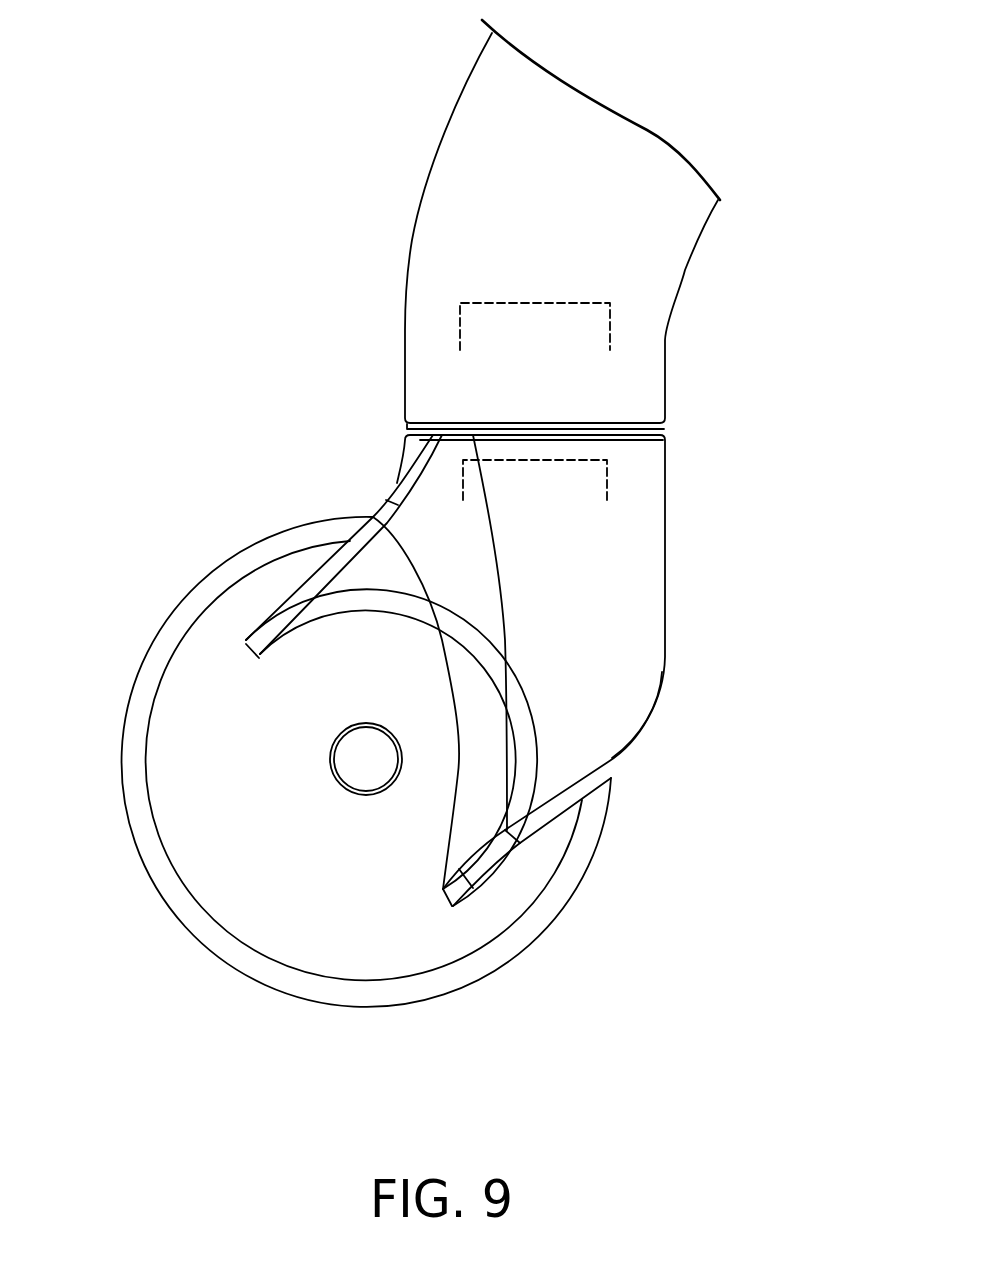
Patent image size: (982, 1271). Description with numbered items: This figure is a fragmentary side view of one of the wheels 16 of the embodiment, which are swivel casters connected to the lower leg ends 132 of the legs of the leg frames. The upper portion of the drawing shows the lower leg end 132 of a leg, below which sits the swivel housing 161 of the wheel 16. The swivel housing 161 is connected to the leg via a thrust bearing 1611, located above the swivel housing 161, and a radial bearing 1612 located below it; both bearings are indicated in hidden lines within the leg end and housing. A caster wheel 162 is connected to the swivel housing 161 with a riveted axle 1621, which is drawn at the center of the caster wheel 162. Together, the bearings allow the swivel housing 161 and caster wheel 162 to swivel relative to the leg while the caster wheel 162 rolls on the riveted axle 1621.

The lower leg end 132 is at (427, 380).
The wheel 16 is at (737, 556).
The swivel housing 161 is at (620, 711).
The thrust bearing 1611 is at (605, 323).
The radial bearing 1612 is at (607, 479).
The caster wheel 162 is at (163, 642).
The riveted axle 1621 is at (362, 757).